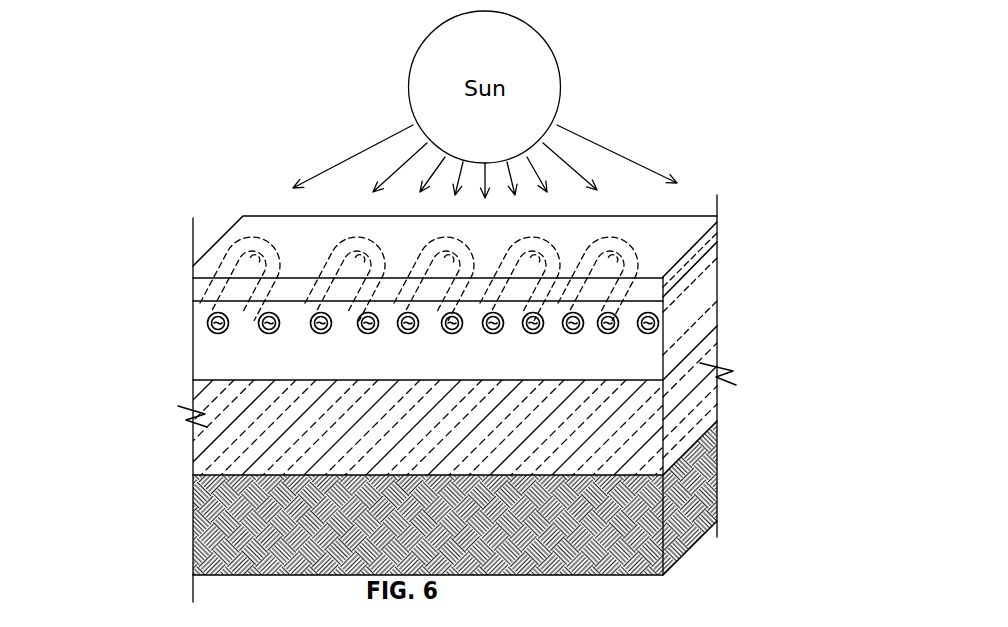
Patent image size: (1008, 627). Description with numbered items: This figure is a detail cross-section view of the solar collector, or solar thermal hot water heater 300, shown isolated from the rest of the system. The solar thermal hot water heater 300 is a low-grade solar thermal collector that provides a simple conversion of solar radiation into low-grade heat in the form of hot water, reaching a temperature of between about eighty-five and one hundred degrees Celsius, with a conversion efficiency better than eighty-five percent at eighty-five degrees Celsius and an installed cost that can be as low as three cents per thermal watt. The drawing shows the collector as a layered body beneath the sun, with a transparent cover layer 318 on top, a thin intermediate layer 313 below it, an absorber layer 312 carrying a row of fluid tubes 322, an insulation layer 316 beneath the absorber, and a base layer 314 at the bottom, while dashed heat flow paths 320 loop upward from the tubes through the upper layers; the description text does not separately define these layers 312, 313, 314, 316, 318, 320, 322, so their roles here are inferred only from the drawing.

The solar thermal hot water heater 300 is at (150, 115).
The absorber layer 312 is at (705, 309).
The intermediate layer 313 is at (707, 244).
The base layer 314 is at (215, 537).
The insulation layer 316 is at (653, 432).
The transparent cover layer 318 is at (713, 232).
The heat flow paths 320 is at (633, 248).
The fluid tubes 322 is at (207, 323).